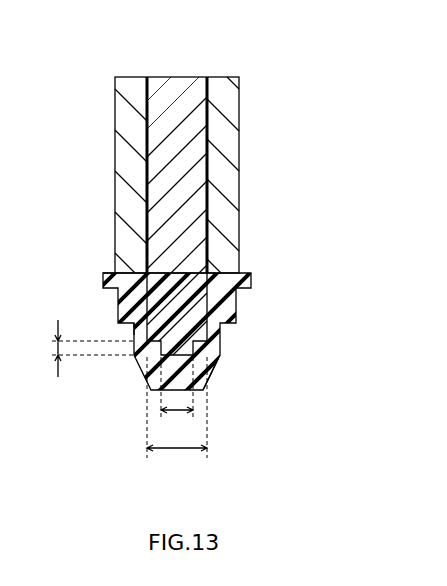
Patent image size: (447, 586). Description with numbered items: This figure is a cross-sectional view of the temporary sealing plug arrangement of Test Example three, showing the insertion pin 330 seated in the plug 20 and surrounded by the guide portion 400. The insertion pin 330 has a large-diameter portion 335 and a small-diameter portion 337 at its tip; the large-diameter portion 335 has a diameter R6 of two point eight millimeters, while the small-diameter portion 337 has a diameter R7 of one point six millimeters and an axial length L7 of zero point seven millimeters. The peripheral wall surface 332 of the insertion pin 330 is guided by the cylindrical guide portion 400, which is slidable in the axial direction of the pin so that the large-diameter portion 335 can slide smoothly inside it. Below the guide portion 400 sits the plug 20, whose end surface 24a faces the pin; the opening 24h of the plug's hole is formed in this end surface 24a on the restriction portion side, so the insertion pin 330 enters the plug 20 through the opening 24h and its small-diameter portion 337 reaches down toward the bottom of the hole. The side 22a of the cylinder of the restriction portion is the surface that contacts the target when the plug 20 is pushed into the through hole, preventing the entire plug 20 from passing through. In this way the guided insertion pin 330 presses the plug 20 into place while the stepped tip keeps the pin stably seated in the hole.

The insertion pin 330 is at (185, 187).
The peripheral wall surface 332 is at (147, 137).
The large-diameter portion 335 is at (203, 164).
The guide portion 400 is at (248, 112).
The plug 20 is at (260, 281).
The end surface 24a is at (108, 273).
The opening 24h is at (205, 264).
The side of the cylinder 22a is at (128, 328).
The small-diameter portion 337 is at (205, 357).
The length of the small-diameter portion L7 is at (79, 348).
The diameter of the small-diameter portion R7 is at (177, 397).
The diameter of the large-diameter portion R6 is at (177, 416).